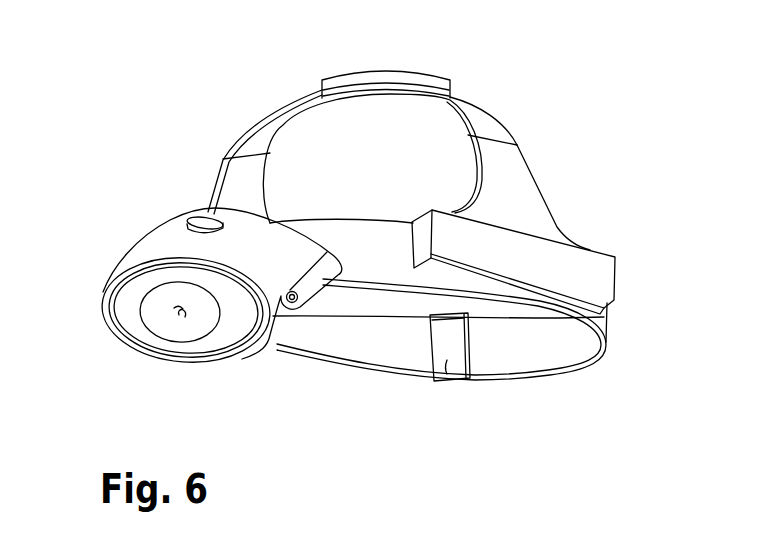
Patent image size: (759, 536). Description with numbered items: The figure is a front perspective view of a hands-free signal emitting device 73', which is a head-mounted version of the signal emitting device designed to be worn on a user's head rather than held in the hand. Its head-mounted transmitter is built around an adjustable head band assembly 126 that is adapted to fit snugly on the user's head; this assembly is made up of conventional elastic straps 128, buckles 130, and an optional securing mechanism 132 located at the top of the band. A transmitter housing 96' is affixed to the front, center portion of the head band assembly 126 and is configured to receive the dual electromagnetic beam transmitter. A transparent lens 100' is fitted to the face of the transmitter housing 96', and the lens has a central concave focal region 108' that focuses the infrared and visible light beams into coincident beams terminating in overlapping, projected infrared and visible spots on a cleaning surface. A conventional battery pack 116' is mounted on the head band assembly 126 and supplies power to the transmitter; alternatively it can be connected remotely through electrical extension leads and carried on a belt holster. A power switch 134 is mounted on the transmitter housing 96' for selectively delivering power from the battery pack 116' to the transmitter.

The hands-free signal emitting device 73' is at (393, 138).
The securing mechanism 132 is at (376, 68).
The adjustable head band assembly 126 is at (552, 214).
The battery pack 116' is at (562, 262).
The elastic straps 128 is at (604, 324).
The buckles 130 is at (450, 357).
The transmitter housing 96' is at (208, 273).
The transparent lens 100' is at (159, 303).
The central concave focal region 108' is at (126, 311).
The power switch 134 is at (197, 220).